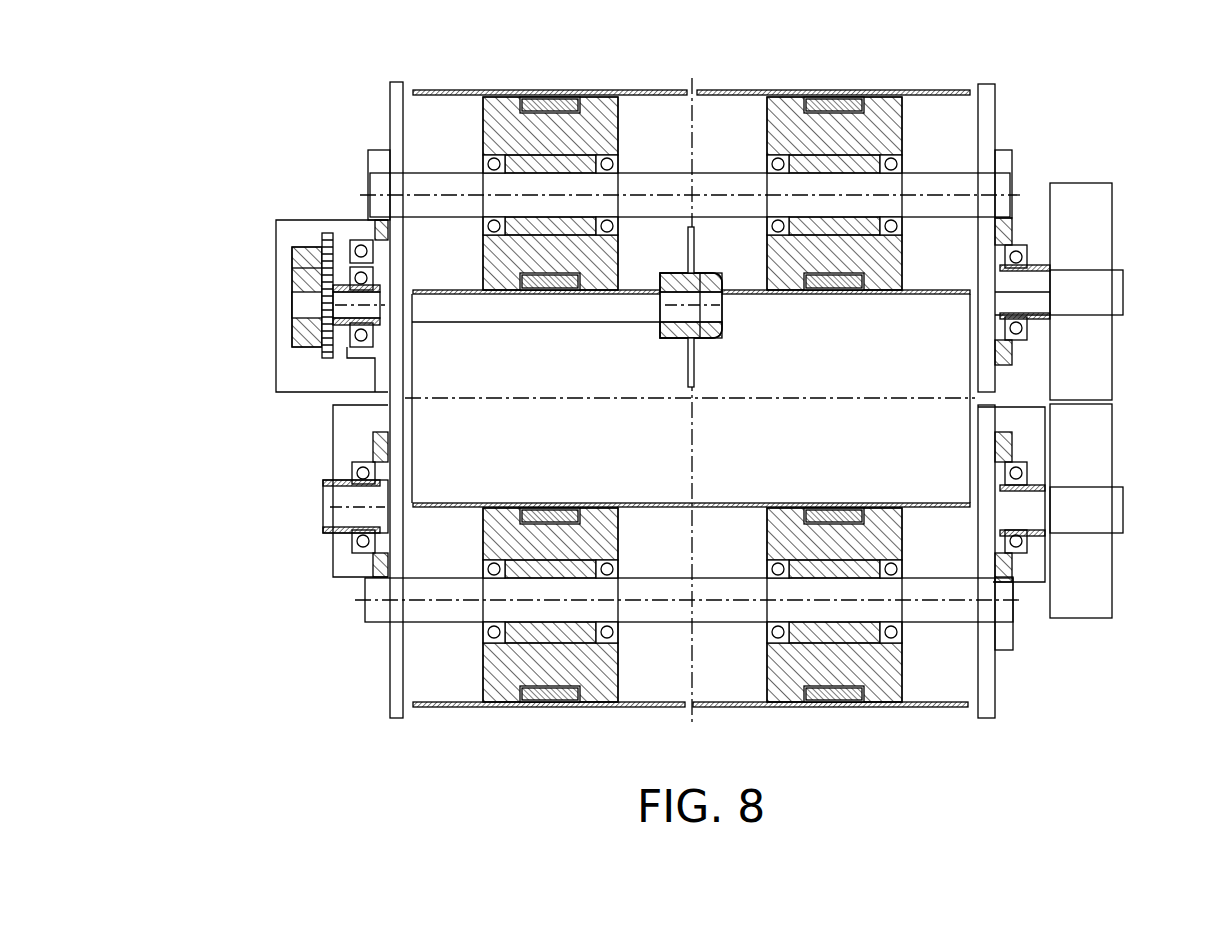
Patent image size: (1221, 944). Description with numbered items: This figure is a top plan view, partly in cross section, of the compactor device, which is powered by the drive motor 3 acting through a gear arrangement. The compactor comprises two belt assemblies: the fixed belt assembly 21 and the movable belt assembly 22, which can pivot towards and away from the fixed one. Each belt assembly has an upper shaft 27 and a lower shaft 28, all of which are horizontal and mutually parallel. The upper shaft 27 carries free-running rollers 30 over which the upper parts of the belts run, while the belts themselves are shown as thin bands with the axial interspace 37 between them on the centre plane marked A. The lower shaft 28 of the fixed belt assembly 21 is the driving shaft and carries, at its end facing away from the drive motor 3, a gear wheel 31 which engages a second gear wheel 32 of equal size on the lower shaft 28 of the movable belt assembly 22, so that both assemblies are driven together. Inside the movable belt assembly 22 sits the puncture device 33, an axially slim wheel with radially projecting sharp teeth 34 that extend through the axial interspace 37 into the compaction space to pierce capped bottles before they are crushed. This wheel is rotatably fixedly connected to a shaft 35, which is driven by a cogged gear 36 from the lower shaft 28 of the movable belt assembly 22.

The drive motor 3 is at (502, 108).
The belt assembly 21 is at (330, 597).
The belt assembly 22 is at (316, 179).
The upper shaft 27 is at (436, 183).
The lower shaft 28 is at (1125, 290).
The free-running rollers 30 is at (776, 112).
The gear wheel 31 is at (1100, 596).
The second gear wheel 32 is at (1100, 349).
The puncture device 33 is at (742, 317).
The teeth 34 is at (697, 380).
The shaft 35 is at (550, 310).
The cogged gear 36 is at (328, 358).
The axial interspace 37 is at (689, 82).
The drum axis A is at (841, 400).